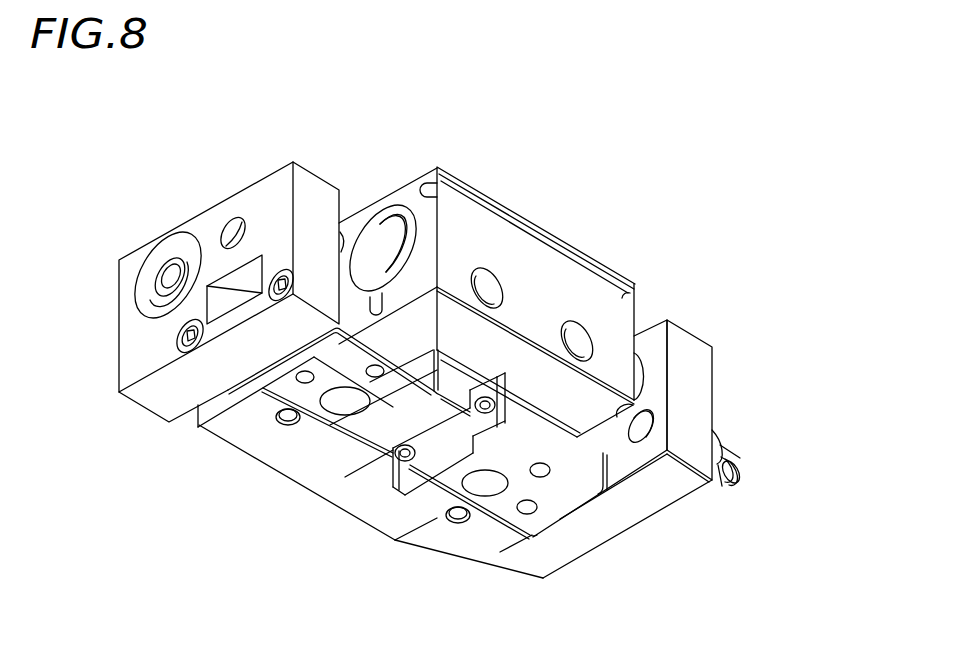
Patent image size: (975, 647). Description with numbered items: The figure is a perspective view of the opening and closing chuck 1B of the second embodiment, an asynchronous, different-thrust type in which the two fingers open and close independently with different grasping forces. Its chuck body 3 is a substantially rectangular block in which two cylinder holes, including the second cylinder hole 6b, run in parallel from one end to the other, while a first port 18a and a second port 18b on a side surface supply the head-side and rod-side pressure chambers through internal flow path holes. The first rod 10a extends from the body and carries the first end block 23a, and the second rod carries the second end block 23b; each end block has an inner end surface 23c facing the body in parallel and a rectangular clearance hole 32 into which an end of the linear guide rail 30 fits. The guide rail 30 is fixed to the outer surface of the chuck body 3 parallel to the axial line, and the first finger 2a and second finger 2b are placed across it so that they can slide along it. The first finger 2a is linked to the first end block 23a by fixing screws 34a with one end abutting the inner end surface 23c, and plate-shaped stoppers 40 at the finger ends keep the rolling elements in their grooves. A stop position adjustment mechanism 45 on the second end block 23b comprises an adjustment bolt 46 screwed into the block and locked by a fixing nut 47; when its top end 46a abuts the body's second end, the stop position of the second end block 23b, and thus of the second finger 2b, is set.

The opening and closing chuck 1B is at (432, 344).
The first end block 23a is at (272, 200).
The first rod 10a is at (170, 275).
The clearance hole 32 is at (228, 283).
The fixing screws 34a is at (185, 338).
The second cylinder hole 6b is at (393, 222).
The chuck body 3 is at (535, 232).
The first port 18a is at (486, 285).
The second port 18b is at (578, 345).
The inner end surface 23c is at (653, 350).
The second end block 23b is at (695, 348).
The fixing nut 47 is at (718, 450).
The stop position adjustment mechanism 45 is at (745, 452).
The adjustment bolt 46 is at (734, 492).
The top end of the adjustment bolt 46a is at (642, 430).
The first finger 2a is at (312, 427).
The second finger 2b is at (482, 527).
The guide rail 30 is at (410, 425).
The stopper 40 is at (395, 528).